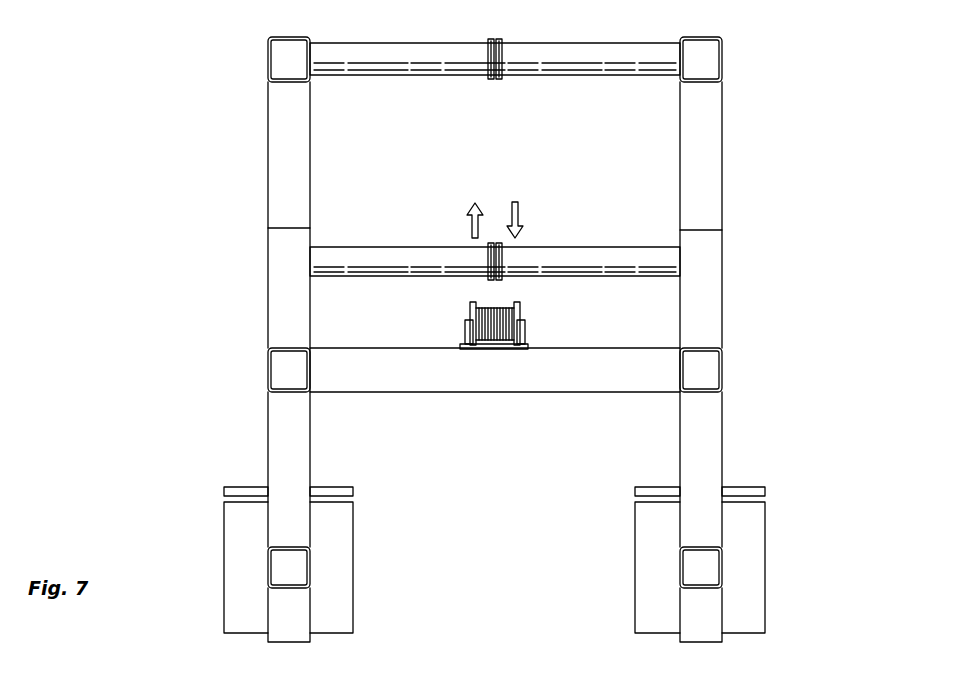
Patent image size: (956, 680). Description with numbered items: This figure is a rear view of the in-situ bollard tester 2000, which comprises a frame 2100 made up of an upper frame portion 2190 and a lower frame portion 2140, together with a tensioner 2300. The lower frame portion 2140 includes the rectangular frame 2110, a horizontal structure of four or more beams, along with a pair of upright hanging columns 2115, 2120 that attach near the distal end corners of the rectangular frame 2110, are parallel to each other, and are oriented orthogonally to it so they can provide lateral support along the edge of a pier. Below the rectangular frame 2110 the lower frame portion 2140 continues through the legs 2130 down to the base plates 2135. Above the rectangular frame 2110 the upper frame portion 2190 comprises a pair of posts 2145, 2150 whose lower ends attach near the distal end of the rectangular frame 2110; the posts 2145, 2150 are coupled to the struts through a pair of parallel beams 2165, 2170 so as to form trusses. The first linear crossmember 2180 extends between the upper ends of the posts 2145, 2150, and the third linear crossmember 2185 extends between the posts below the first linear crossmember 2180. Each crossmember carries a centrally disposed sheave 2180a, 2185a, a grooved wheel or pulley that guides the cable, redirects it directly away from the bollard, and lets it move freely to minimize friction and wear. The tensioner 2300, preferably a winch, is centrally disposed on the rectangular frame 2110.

The in-situ bollard tester 2000 is at (835, 97).
The frame 2100 is at (757, 190).
The rectangular frame 2110 is at (522, 392).
The hanging column 2115 is at (703, 296).
The hanging column 2120 is at (290, 292).
The leg 2130 is at (295, 570).
The base plate 2135 is at (243, 487).
The lower frame portion 2140 is at (757, 432).
The post 2145 is at (705, 143).
The post 2150 is at (290, 188).
The beam 2165 is at (710, 37).
The beam 2170 is at (286, 37).
The first linear crossmember 2180 is at (562, 52).
The sheave 2180a is at (490, 80).
The third linear crossmember 2185 is at (580, 257).
The sheave 2185a is at (490, 277).
The upper frame portion 2190 is at (245, 118).
The tensioner 2300 is at (528, 323).